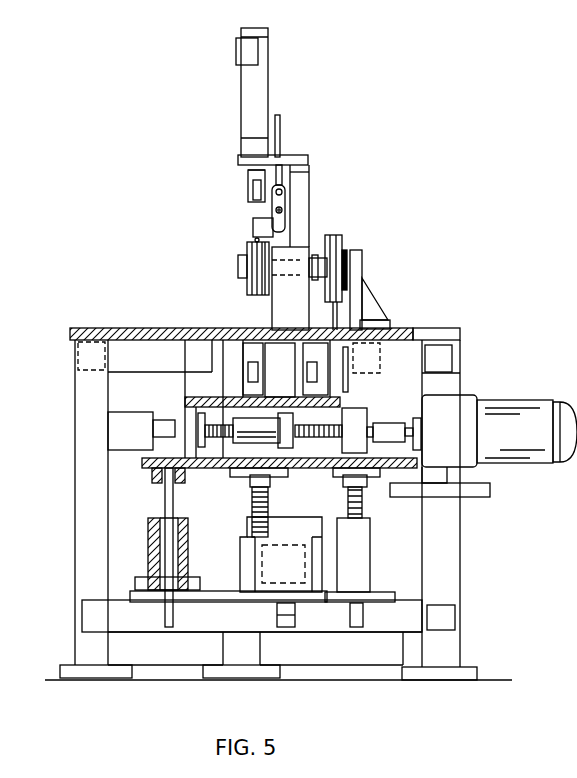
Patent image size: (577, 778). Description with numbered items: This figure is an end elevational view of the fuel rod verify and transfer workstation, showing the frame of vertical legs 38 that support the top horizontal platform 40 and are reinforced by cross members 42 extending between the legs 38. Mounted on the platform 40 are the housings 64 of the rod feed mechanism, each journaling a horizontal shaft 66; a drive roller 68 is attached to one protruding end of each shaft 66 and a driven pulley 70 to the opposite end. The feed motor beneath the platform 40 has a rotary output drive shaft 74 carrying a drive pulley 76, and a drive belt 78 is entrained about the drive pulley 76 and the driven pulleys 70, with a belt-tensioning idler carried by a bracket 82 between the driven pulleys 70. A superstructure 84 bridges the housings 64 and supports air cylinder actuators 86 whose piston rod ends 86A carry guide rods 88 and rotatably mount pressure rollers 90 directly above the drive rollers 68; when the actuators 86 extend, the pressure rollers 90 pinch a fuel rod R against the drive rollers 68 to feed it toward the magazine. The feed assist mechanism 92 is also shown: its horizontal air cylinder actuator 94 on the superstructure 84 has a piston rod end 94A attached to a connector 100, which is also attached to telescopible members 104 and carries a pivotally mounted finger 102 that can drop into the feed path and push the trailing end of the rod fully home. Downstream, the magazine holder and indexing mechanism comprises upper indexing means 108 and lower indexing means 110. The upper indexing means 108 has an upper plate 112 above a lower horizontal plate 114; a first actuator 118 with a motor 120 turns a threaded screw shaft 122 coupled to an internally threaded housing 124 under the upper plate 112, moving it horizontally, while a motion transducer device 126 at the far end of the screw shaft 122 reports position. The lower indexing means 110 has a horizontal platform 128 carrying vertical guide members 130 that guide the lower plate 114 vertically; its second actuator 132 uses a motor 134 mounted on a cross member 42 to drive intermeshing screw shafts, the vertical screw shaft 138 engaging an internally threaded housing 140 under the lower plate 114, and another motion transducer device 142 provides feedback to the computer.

The vertical legs 38 is at (85, 648).
The top horizontal platform 40 is at (100, 328).
The cross members 42 is at (135, 363).
The housings 64 is at (302, 307).
The shafts 66 is at (290, 294).
The drive rollers 68 is at (243, 288).
The driven pulleys 70 is at (343, 240).
The rotary output drive shaft 74 is at (313, 372).
The drive pulley 76 is at (352, 352).
The drive belt 78 is at (356, 300).
The bracket 82 is at (362, 262).
The superstructure 84 is at (320, 180).
The actuators 86 is at (268, 83).
The piston rod ends 86A is at (246, 158).
The guide rods 88 is at (280, 127).
The pressure rollers 90 is at (249, 184).
The fuel rod feed assist mechanism 92 is at (238, 191).
The actuator 94 is at (297, 165).
The piston rod end 94A is at (302, 172).
The connector 100 is at (270, 208).
The finger 102 is at (252, 228).
The telescopible members 104 is at (284, 212).
The upper indexing means 108 is at (465, 384).
The lower indexing means 110 is at (387, 543).
The upper plate 112 is at (212, 398).
The lower horizontal plate 114 is at (187, 457).
The first actuator 118 is at (362, 498).
The motor 120 is at (493, 400).
The screw shaft 122 is at (393, 415).
The internally threaded housing 124 is at (247, 420).
The motion transducer device 126 is at (120, 437).
The horizontal platform 128 is at (130, 586).
The vertical guide members 130 is at (144, 510).
The second actuator 132 is at (236, 562).
The motor 134 is at (325, 528).
The vertical screw shaft 138 is at (250, 476).
The internally threaded housing 140 is at (268, 487).
The motion transducer device 142 is at (296, 583).
The fuel rod R is at (253, 238).